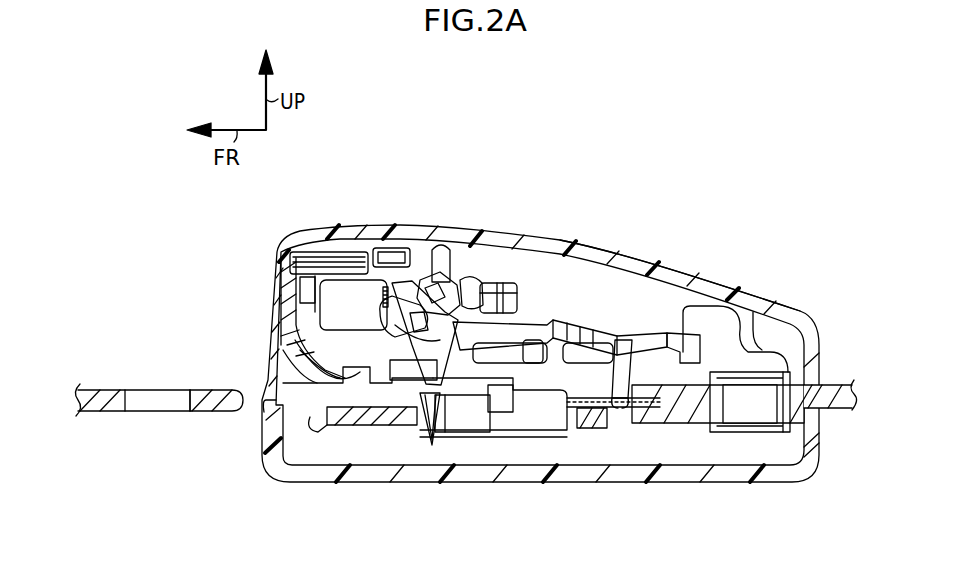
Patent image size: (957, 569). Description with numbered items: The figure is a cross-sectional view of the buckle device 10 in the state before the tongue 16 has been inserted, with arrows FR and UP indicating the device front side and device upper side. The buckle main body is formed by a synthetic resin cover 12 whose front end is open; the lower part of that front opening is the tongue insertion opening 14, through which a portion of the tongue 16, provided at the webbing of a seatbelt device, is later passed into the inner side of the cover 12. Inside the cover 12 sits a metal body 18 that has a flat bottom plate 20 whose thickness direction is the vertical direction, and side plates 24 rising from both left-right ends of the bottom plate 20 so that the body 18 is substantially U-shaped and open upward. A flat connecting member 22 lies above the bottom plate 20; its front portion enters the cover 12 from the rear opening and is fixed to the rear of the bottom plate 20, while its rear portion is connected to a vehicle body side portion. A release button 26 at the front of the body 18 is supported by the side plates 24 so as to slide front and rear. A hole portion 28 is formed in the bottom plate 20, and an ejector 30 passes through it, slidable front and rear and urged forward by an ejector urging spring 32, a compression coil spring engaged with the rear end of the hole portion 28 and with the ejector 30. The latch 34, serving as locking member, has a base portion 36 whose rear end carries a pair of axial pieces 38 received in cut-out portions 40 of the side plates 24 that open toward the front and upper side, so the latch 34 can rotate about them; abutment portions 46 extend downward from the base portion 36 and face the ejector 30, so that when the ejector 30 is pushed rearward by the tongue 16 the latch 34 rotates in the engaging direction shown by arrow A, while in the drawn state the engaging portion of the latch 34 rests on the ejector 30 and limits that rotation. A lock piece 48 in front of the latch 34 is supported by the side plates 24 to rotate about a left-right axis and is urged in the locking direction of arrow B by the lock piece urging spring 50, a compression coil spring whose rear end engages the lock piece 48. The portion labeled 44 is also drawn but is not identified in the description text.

The buckle device 10 is at (668, 160).
The cover 12 is at (670, 266).
The tongue insertion opening 14 is at (265, 405).
The tongue 16 is at (100, 390).
The body 18 is at (703, 302).
The bottom plate 20 is at (690, 425).
The connecting member 22 is at (848, 384).
The side plates 24 is at (767, 350).
The release button 26 is at (285, 281).
The hole portion 28 is at (565, 423).
The ejector 30 is at (410, 432).
The ejector urging spring 32 is at (608, 423).
The latch 34 is at (540, 276).
The base portion 36 is at (585, 325).
The axial pieces 38 is at (735, 339).
The cut-out portions 40 is at (680, 344).
The flange 44 is at (188, 412).
The abutment portions 46 is at (638, 402).
The lock piece 48 is at (290, 351).
The lock piece urging spring 50 is at (290, 281).
The engaging direction A is at (428, 446).
The locking direction B is at (375, 390).